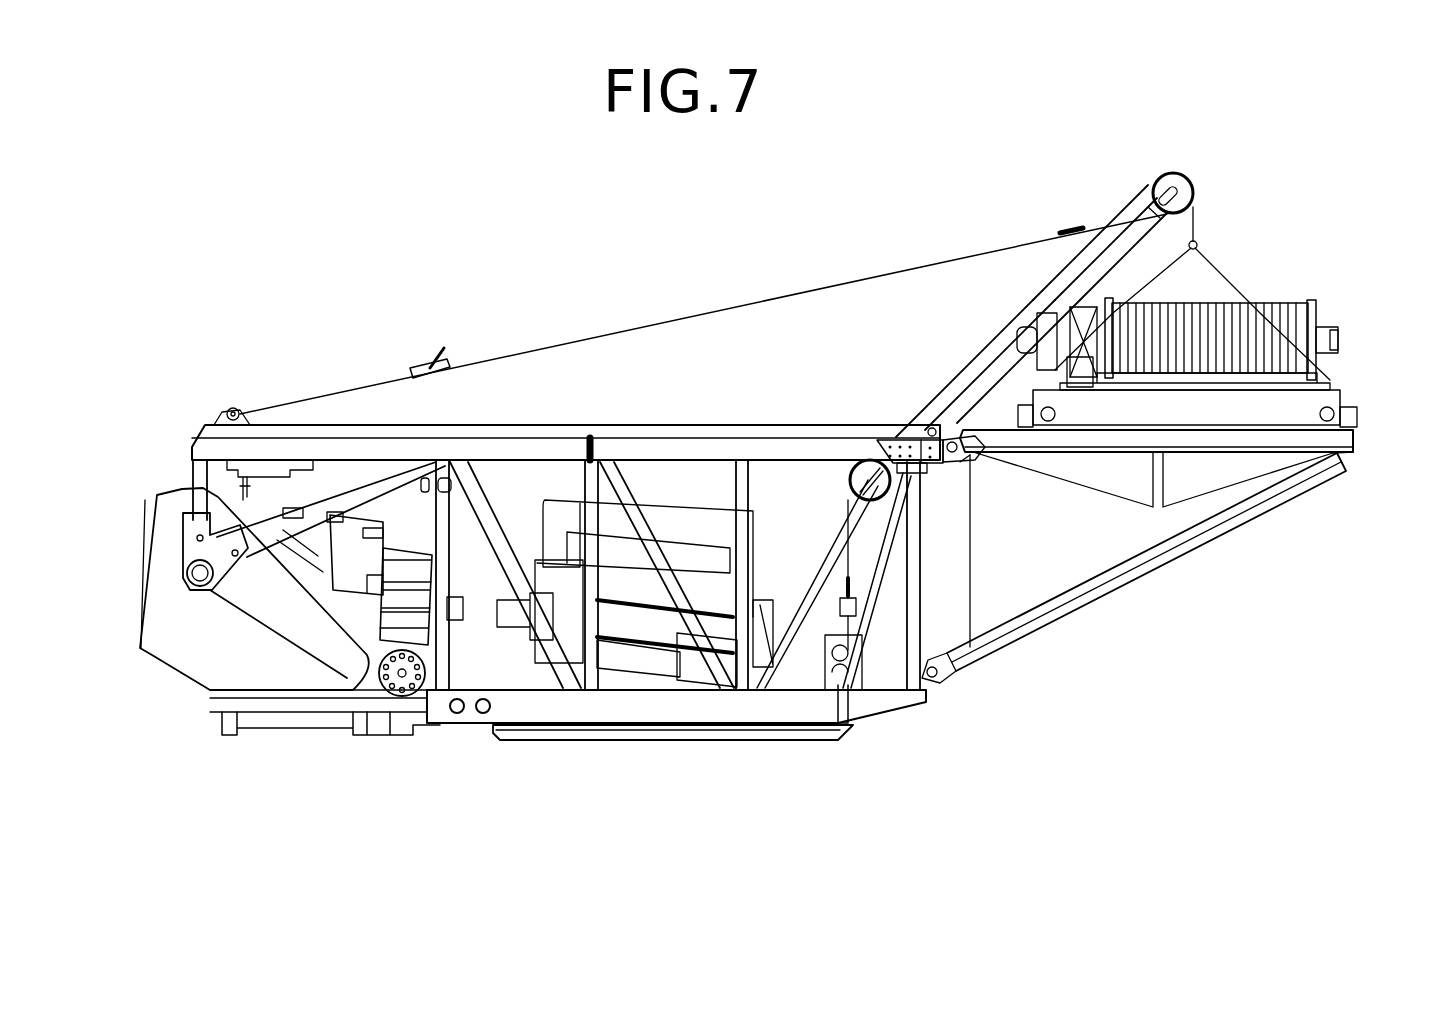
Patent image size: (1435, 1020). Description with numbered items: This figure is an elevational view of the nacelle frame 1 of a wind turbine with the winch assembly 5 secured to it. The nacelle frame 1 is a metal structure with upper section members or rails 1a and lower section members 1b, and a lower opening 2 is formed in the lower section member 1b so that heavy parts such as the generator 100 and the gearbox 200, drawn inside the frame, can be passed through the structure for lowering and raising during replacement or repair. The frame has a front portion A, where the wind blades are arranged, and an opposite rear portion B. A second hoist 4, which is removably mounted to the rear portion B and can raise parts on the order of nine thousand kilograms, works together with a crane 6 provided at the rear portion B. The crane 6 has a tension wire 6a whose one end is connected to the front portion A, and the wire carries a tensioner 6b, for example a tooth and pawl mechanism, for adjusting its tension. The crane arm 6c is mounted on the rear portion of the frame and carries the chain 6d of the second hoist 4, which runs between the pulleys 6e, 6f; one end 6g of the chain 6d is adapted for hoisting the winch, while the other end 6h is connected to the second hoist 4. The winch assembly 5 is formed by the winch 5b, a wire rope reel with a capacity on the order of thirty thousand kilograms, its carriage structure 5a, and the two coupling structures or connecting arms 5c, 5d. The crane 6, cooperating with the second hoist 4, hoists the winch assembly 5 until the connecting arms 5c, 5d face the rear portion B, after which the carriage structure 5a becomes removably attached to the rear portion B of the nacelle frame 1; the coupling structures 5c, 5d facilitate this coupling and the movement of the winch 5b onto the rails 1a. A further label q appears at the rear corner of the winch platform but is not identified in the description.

The nacelle frame 1 is at (823, 416).
The upper section members or rails 1a is at (227, 411).
The lower section members 1b is at (555, 705).
The lower opening 2 is at (732, 737).
The second hoist 4 is at (852, 690).
The winch assembly 5 is at (1357, 332).
The carriage structure 5a is at (1183, 558).
The winch 5b is at (1285, 300).
The coupling structure 5c is at (1262, 443).
The coupling structure 5d is at (1108, 594).
The crane 6 is at (1200, 186).
The tension wire 6a is at (738, 304).
The tensioner 6b is at (418, 363).
The crane arm 6c is at (993, 370).
The chain 6d is at (1123, 210).
The pulley 6e is at (1165, 175).
The pulley 6f is at (930, 474).
The end of the chain 6g is at (1198, 244).
The other end of the chain 6h is at (857, 608).
The generator 100 is at (729, 500).
The gearbox 200 is at (395, 535).
The front portion A is at (146, 504).
The rear portion B is at (923, 481).
The platform corner q is at (1345, 455).